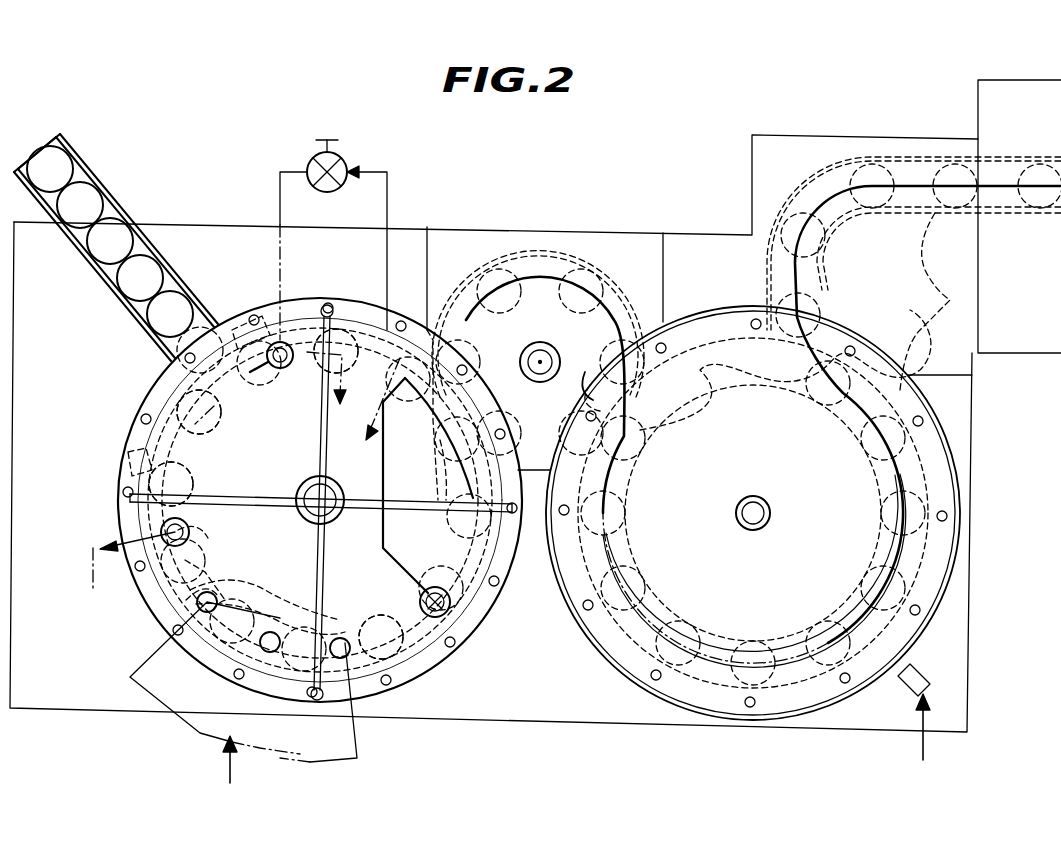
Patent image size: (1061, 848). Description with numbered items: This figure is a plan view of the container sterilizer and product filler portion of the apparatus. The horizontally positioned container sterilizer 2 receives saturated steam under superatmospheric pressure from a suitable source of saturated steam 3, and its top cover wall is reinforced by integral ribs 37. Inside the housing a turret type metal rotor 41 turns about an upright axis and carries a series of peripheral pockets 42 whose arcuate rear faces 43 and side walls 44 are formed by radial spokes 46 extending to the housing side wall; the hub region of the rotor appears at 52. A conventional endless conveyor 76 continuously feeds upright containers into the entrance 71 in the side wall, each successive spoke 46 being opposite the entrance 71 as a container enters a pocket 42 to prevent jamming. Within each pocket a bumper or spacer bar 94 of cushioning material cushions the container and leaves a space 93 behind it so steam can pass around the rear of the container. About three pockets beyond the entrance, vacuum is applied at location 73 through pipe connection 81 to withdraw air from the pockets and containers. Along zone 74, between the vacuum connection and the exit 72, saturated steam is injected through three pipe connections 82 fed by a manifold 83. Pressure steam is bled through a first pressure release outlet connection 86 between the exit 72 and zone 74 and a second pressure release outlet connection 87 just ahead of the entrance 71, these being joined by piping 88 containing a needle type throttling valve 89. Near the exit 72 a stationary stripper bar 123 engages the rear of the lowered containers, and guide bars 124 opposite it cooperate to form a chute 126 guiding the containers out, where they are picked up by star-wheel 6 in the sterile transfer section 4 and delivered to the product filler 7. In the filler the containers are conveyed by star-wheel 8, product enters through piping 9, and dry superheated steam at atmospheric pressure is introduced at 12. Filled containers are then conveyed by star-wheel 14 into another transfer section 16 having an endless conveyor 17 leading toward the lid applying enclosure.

The container sterilizer 2 is at (428, 674).
The source of saturated steam 3 is at (353, 408).
The transfer section 4 is at (496, 232).
The star-wheel 6 is at (606, 280).
The product filler 7 is at (956, 470).
The star-wheel 8 is at (905, 550).
The piping 9 is at (762, 500).
The superheated steam inlet 12 is at (898, 694).
The star-wheel 14 is at (912, 342).
The transfer section 16 is at (978, 104).
The endless conveyor 17 is at (1012, 165).
The integral ribs 37 is at (320, 585).
The turret type metal rotor 41 is at (150, 428).
The peripheral pockets 42 is at (222, 416).
The rear faces 43 is at (432, 560).
The side walls 44 is at (182, 468).
The radial spokes 46 is at (456, 482).
The hub 52 is at (306, 480).
The entrance 71 is at (185, 376).
The exit 72 is at (436, 300).
The vacuum location 73 is at (128, 540).
The steam applying zone 74 is at (323, 767).
The endless conveyor 76 is at (142, 251).
The pipe connection 81 is at (186, 526).
The pipe connections 82 is at (300, 620).
The manifold 83 is at (203, 738).
The first pressure release outlet connection 86 is at (468, 616).
The second pressure release outlet connection 87 is at (278, 340).
The piping 88 is at (392, 182).
The needle type throttling valve 89 is at (341, 160).
The space 93 is at (226, 428).
The bumper or spacer bar 94 is at (222, 448).
The stationary stripper bar 123 is at (422, 470).
The guide bars 124 is at (476, 416).
The chute 126 is at (470, 392).